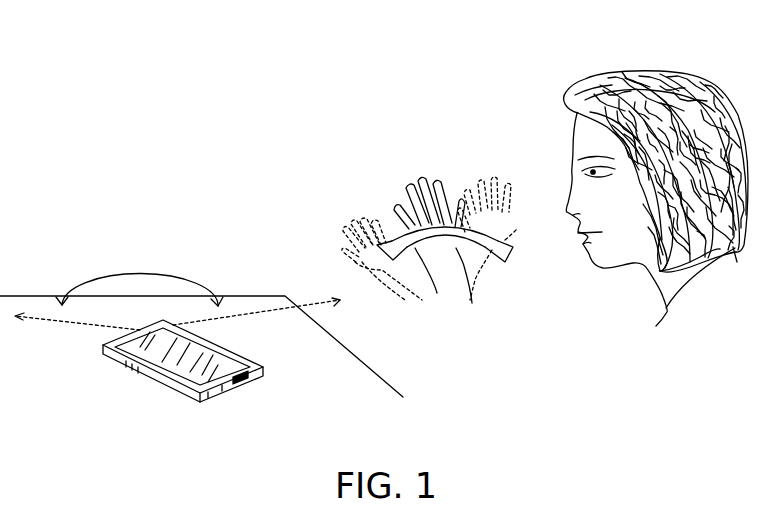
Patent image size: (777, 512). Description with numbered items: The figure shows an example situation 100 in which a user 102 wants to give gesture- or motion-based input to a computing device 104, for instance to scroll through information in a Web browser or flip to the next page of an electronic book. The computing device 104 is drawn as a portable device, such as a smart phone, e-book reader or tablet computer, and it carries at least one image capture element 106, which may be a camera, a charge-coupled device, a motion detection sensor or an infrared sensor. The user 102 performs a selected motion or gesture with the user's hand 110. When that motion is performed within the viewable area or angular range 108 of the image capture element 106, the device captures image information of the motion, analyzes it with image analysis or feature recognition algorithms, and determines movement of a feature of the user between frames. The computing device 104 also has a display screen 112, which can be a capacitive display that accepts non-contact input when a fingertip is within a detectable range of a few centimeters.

The example situation 100 is at (83, 105).
The user 102 is at (532, 122).
The computing device 104 is at (103, 349).
The image capture element 106 is at (139, 330).
The angular range 108 is at (139, 278).
The user's hand 110 is at (365, 178).
The display screen 112 is at (244, 384).